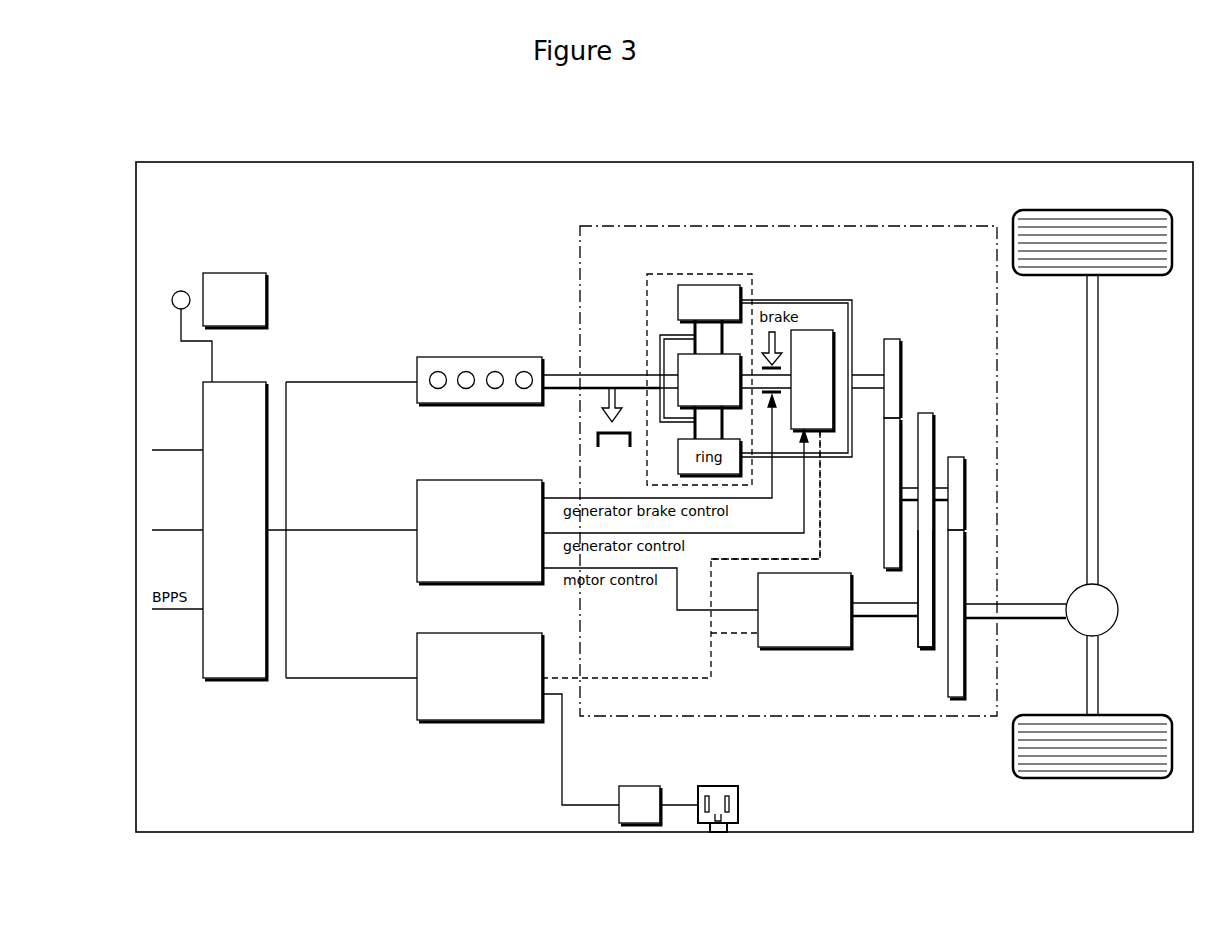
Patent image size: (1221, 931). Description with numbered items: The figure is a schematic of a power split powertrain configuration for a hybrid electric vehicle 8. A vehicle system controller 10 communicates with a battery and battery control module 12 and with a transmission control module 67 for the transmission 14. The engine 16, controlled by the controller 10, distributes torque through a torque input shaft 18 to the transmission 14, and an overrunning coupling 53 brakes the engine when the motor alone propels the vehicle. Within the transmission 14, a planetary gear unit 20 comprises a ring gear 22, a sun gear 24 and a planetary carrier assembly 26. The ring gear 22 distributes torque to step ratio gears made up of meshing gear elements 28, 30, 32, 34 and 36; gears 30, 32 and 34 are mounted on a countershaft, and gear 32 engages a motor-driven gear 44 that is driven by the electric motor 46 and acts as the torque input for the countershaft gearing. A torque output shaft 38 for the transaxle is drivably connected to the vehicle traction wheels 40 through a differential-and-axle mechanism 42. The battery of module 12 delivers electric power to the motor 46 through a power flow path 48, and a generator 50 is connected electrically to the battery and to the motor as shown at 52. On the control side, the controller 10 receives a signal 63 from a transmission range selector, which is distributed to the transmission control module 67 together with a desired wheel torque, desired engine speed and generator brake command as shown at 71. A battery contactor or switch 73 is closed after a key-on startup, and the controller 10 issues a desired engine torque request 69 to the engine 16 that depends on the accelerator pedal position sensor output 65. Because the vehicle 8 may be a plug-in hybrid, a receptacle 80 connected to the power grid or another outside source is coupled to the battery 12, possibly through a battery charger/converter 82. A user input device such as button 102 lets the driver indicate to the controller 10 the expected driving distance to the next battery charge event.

The hybrid electric vehicle 8 is at (957, 760).
The vehicle system controller 10 is at (238, 382).
The battery and battery control module 12 is at (495, 720).
The transmission 14 is at (662, 716).
The engine 16 is at (523, 357).
The torque input shaft 18 is at (571, 389).
The planetary gear unit 20 is at (752, 286).
The ring gear 22 is at (678, 303).
The sun gear 24 is at (678, 366).
The planetary carrier assembly 26 is at (660, 345).
The meshing gear element 28 is at (900, 357).
The meshing gear element 30 is at (884, 523).
The meshing gear element 32 is at (933, 430).
The meshing gear element 34 is at (964, 470).
The meshing gear element 36 is at (964, 565).
The torque output shaft 38 is at (1046, 620).
The vehicle traction wheels 40 is at (1122, 210).
The differential-and-axle mechanism 42 is at (1108, 610).
The motor-driven gear 44 is at (925, 649).
The electric motor 46 is at (806, 648).
The power flow path 48 is at (700, 676).
The generator 50 is at (836, 340).
The electrical connection 52 is at (726, 561).
The overrunning coupling 53 is at (606, 394).
The transmission range selector signal 63 is at (187, 463).
The accelerator pedal position sensor output 65 is at (187, 543).
The transmission control module 67 is at (440, 480).
The desired engine torque request 69 is at (352, 384).
The desired wheel torque, desired engine speed and generator brake command signals 71 is at (348, 532).
The battery contactor 73 is at (348, 680).
The receptacle 80 is at (716, 786).
The battery charger/converter 82 is at (640, 805).
The button 102 is at (172, 300).